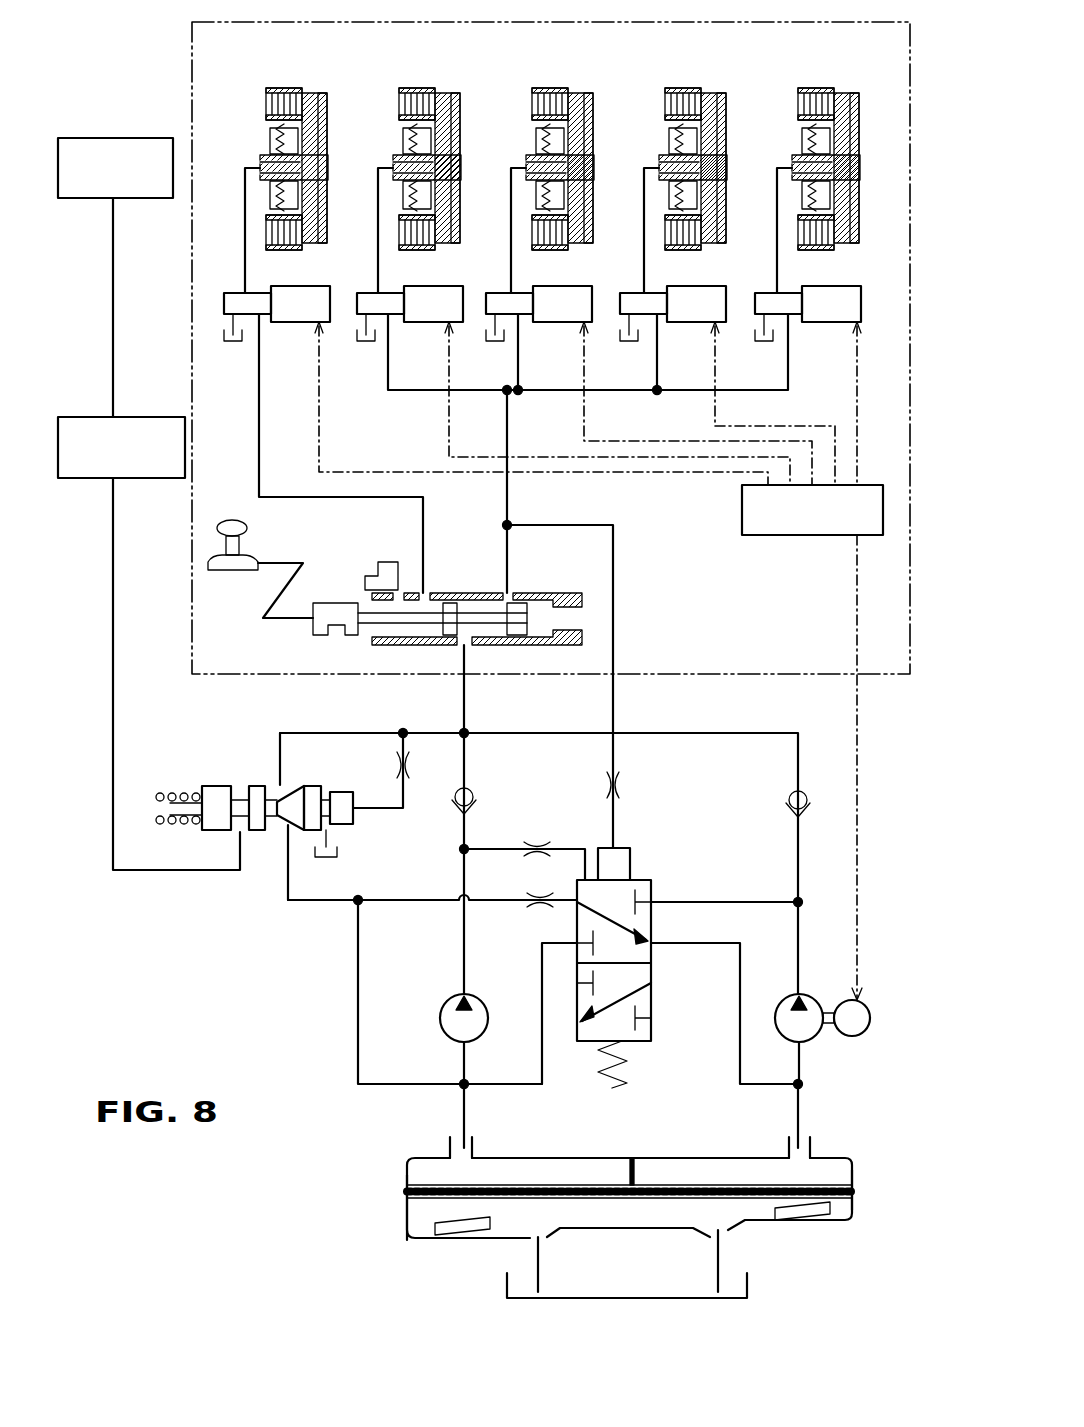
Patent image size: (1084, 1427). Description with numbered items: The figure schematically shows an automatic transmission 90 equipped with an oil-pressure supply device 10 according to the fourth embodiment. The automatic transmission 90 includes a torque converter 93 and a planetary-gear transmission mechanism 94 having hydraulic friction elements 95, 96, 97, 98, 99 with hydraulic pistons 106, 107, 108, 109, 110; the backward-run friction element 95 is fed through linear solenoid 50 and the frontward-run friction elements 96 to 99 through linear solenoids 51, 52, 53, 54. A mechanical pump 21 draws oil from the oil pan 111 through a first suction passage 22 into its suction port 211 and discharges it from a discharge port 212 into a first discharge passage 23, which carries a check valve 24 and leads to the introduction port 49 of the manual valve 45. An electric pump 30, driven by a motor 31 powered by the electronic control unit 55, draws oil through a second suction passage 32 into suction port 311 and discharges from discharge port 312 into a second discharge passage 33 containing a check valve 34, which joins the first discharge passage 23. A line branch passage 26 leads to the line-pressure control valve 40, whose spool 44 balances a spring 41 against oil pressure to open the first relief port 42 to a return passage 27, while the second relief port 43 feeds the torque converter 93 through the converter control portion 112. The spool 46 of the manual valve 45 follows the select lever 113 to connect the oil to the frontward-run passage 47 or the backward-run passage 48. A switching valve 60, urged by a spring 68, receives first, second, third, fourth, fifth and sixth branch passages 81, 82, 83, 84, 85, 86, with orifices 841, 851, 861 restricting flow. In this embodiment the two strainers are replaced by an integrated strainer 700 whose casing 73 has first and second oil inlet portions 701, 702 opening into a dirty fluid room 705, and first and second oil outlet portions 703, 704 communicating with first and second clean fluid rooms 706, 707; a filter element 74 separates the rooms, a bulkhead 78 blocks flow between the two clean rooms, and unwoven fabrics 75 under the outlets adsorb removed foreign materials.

The oil-pressure supply device 10 is at (278, 1033).
The mechanical pump 21 is at (443, 1020).
The first suction passage 22 is at (462, 1108).
The first discharge passage 23 is at (466, 712).
The check valve 24 is at (472, 796).
The line branch passage 26 is at (425, 733).
The return passage 27 is at (315, 900).
The electric pump 30 is at (790, 1015).
The motor 31 is at (872, 1018).
The second suction passage 32 is at (805, 1108).
The second discharge passage 33 is at (558, 733).
The check valve 34 is at (790, 795).
The line-pressure control valve 40 is at (238, 762).
The spring 41 is at (180, 797).
The first relief port 42 is at (278, 832).
The second relief port 43 is at (235, 832).
The spool 44 is at (318, 786).
The manual valve 45 is at (545, 590).
The spool 46 is at (450, 603).
The frontward-run passage 47 is at (510, 493).
The backward-run passage 48 is at (423, 518).
The introduction port 49 is at (467, 645).
The linear solenoid 50 is at (296, 323).
The linear solenoid 51 is at (429, 323).
The linear solenoid 52 is at (562, 323).
The linear solenoid 53 is at (695, 323).
The linear solenoid 54 is at (830, 323).
The electronic control unit 55 is at (815, 535).
The switching valve 60 is at (648, 868).
The spring 68 is at (608, 1072).
The casing 73 is at (407, 1175).
The filter element 74 is at (575, 1190).
The unwoven fabrics 75 is at (460, 1229).
The bulkhead 78 is at (638, 1175).
The first branch passage 81 is at (542, 980).
The second branch passage 82 is at (740, 1055).
The third branch passage 83 is at (753, 900).
The fourth branch passage 84 is at (500, 902).
The fifth branch passage 85 is at (507, 849).
The sixth branch passage 86 is at (616, 705).
The automatic transmission 90 is at (126, 66).
The torque converter 93 is at (83, 138).
The planetary-gear transmission mechanism 94 is at (192, 122).
The backward-run friction element 95 is at (290, 78).
The frontward-run friction element 96 is at (423, 78).
The frontward-run friction element 97 is at (556, 78).
The frontward-run friction element 98 is at (689, 78).
The frontward-run friction element 99 is at (822, 78).
The hydraulic piston 106 is at (318, 116).
The hydraulic piston 107 is at (451, 116).
The hydraulic piston 108 is at (584, 116).
The hydraulic piston 109 is at (717, 116).
The hydraulic piston 110 is at (850, 116).
The oil pan 111 is at (750, 1290).
The converter control portion 112 is at (82, 417).
The select lever 113 is at (248, 528).
The suction port 211 is at (465, 1043).
The discharge port 212 is at (463, 994).
The suction port 311 is at (805, 1043).
The discharge port 312 is at (800, 994).
The integrated strainer 700 is at (407, 1212).
The first oil inlet portion 701 is at (545, 1240).
The second oil inlet portion 702 is at (715, 1237).
The first oil outlet portion 703 is at (472, 1140).
The second oil outlet portion 704 is at (790, 1140).
The dirty fluid room 705 is at (623, 1218).
The first clean fluid room 706 is at (543, 1170).
The second clean fluid room 707 is at (698, 1170).
The orifice 841 is at (542, 890).
The orifice 851 is at (540, 842).
The orifice 861 is at (620, 786).